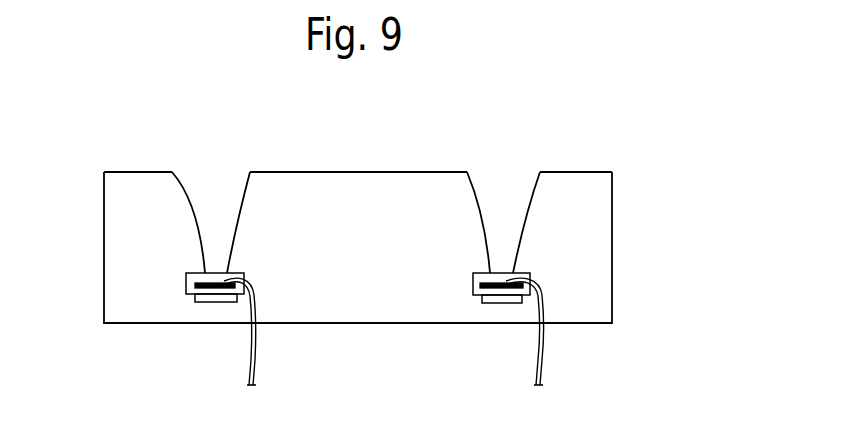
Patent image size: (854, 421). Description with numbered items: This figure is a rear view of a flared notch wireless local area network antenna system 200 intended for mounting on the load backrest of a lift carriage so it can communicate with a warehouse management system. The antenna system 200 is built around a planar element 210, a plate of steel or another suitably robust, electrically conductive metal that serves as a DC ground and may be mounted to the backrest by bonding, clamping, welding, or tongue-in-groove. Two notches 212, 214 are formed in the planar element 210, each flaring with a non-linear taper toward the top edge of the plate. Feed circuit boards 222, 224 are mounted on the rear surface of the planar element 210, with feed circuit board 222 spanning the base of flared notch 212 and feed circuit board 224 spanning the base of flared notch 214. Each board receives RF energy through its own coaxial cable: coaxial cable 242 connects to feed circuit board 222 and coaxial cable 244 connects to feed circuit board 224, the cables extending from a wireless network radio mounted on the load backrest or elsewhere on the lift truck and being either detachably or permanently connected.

The antenna system 200 is at (572, 140).
The planar element 210 is at (320, 172).
The flared notch 212 is at (212, 217).
The flared notch 214 is at (503, 217).
The feed circuit board 222 is at (186, 279).
The feed circuit board 224 is at (473, 279).
The coaxial cable 242 is at (248, 371).
The coaxial cable 244 is at (535, 371).